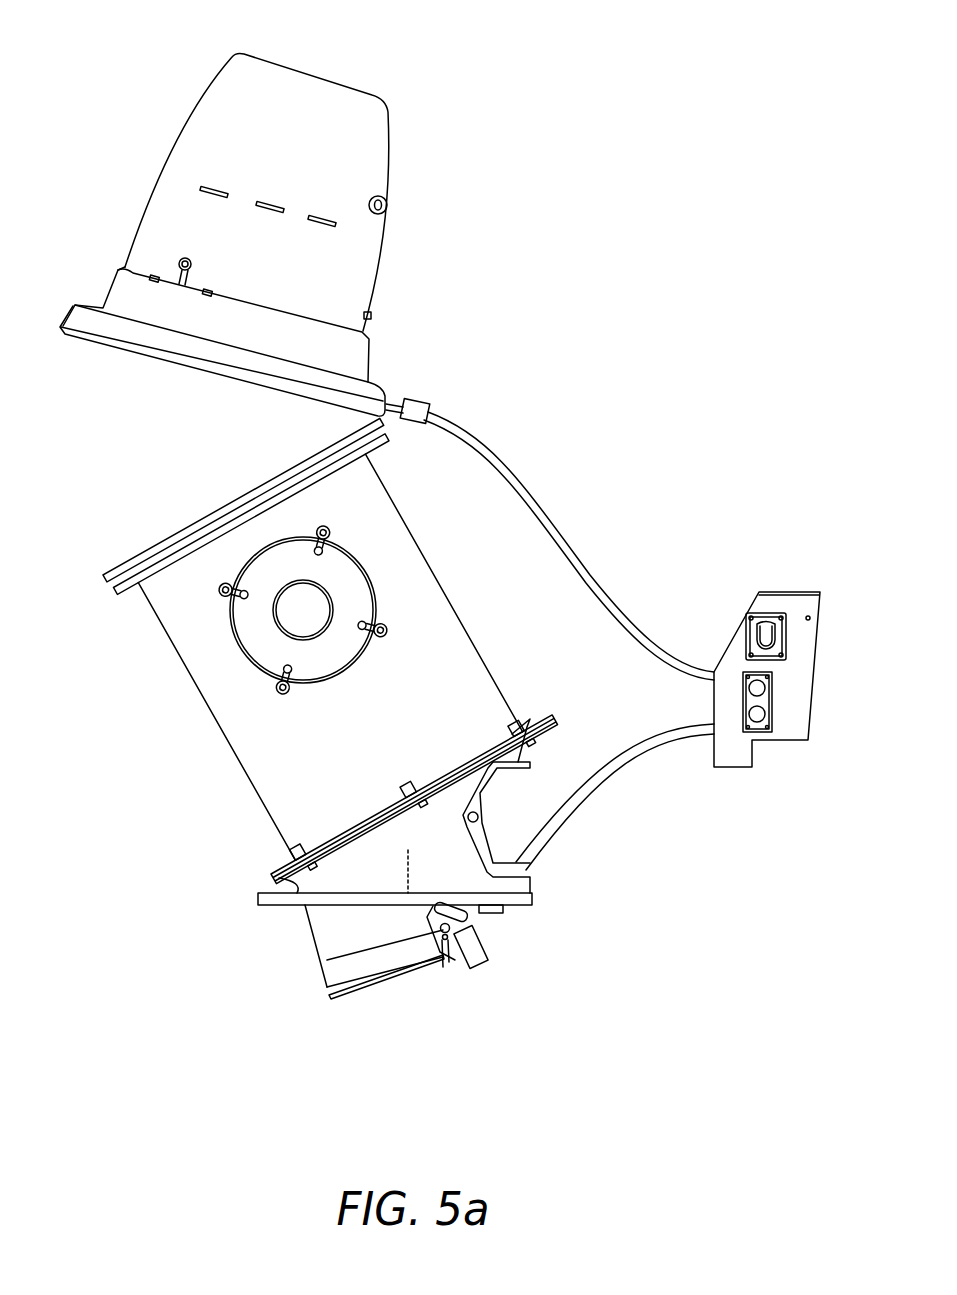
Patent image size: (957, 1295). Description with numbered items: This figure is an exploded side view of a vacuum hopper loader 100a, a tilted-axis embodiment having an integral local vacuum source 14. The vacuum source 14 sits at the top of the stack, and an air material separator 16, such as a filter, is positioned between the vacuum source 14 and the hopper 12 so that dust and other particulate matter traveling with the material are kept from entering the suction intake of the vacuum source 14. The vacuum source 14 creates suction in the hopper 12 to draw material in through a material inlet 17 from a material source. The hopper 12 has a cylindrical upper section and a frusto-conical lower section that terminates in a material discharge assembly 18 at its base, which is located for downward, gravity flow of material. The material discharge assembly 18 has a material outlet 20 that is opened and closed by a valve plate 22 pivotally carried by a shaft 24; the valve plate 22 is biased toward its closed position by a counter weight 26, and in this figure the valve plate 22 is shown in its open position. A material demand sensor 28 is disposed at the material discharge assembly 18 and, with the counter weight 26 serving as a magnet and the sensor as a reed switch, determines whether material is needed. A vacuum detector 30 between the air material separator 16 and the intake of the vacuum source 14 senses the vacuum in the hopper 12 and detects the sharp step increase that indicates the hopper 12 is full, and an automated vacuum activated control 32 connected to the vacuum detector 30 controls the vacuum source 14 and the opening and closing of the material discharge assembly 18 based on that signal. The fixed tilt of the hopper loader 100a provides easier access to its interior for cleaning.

The vacuum hopper loader 100a is at (734, 381).
The vacuum source 14 is at (308, 78).
The vacuum detector 30 is at (417, 402).
The vacuum activated control 32 is at (792, 590).
The air material separator 16 is at (170, 535).
The hopper 12 is at (257, 805).
The material inlet 17 is at (243, 633).
The material discharge assembly 18 is at (312, 930).
The material outlet 20 is at (327, 987).
The valve plate 22 is at (330, 998).
The shaft 24 is at (443, 958).
The counter weight 26 is at (483, 970).
The material demand sensor 28 is at (505, 912).